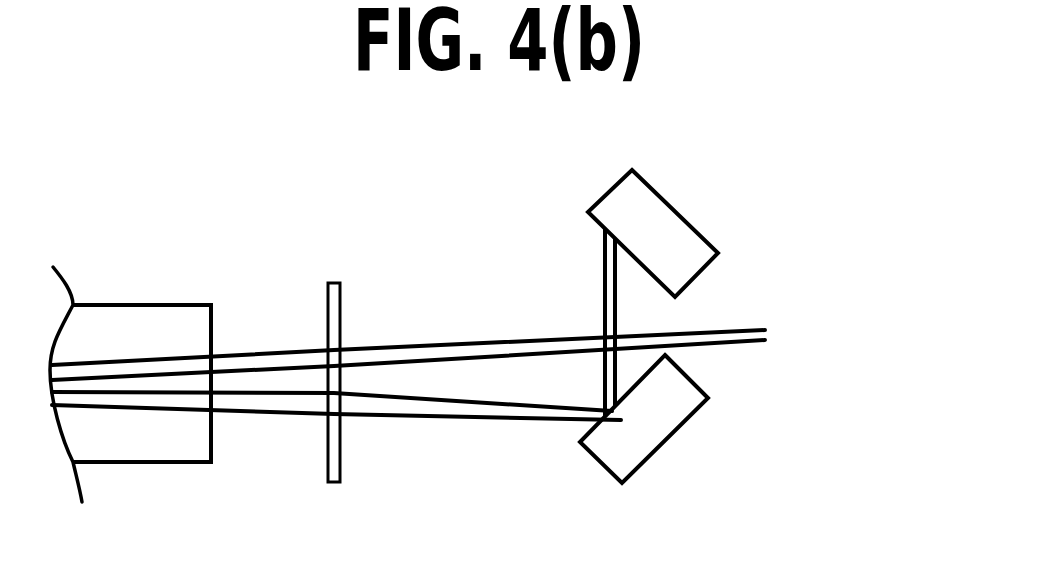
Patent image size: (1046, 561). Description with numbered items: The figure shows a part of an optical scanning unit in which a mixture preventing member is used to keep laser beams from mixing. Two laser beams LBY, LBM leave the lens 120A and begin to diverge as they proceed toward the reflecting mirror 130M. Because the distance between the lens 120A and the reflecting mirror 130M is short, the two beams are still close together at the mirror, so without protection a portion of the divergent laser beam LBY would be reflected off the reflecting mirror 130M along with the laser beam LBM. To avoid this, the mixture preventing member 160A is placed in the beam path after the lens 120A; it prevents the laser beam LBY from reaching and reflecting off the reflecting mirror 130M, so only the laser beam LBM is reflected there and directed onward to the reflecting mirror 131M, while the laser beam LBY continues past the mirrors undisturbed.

The lens 120A is at (147, 322).
The mixture preventing member 160A is at (343, 307).
The laser beam LBY is at (370, 355).
The laser beam LBM is at (407, 413).
The reflecting mirror 131M is at (683, 252).
The reflecting mirror 130M is at (657, 430).